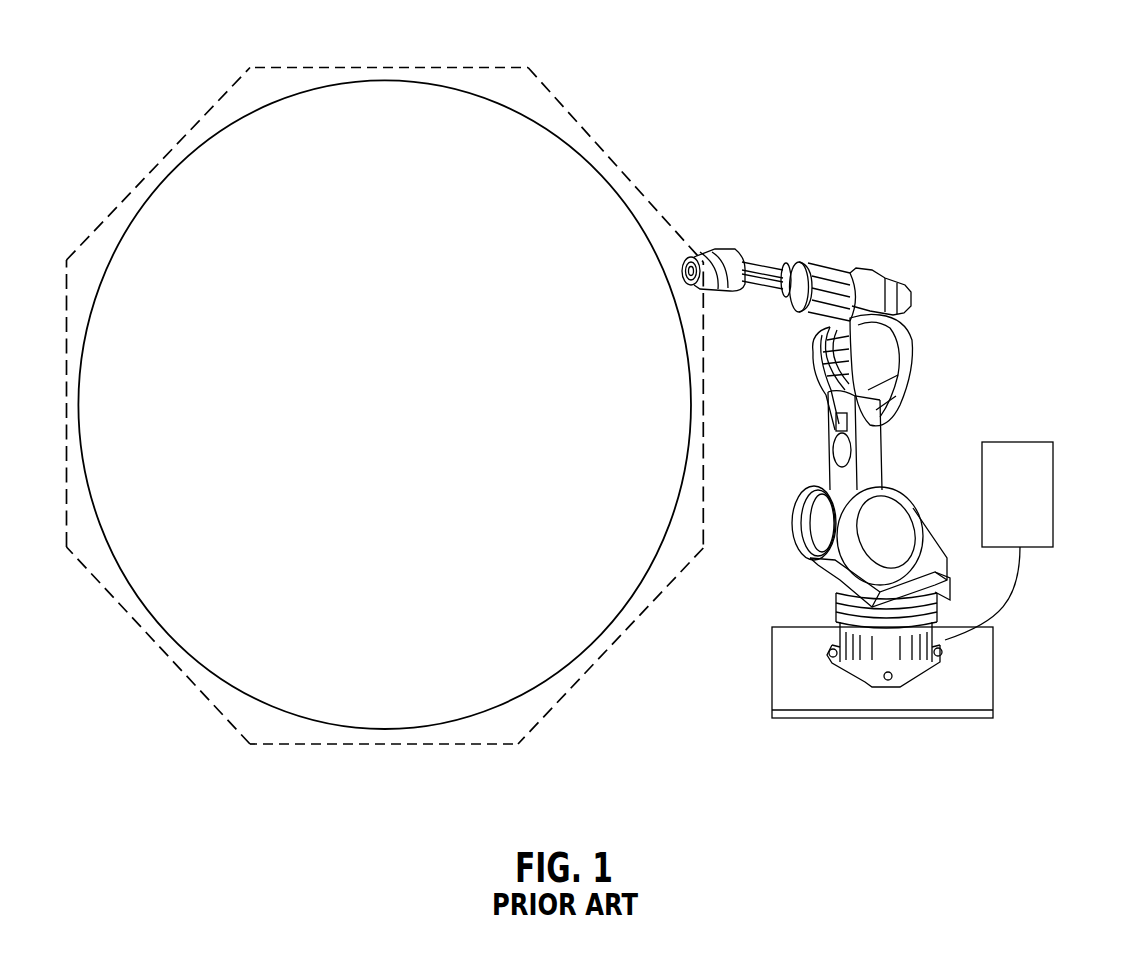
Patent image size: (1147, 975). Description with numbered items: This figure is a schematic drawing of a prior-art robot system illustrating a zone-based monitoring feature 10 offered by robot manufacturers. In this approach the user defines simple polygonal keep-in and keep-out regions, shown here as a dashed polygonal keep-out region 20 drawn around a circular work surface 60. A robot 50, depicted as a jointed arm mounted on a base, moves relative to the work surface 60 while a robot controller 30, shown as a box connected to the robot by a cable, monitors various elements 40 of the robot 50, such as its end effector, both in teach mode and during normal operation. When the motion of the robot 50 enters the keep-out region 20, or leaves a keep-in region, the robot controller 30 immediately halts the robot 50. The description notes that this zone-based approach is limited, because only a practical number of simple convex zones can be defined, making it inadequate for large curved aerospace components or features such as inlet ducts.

The zone-based monitoring feature 10 is at (854, 205).
The keep-out region 20 is at (538, 79).
The robot controller 30 is at (1053, 465).
The elements of a robot 40 is at (765, 256).
The robot 50 is at (912, 281).
The work surface 60 is at (237, 142).